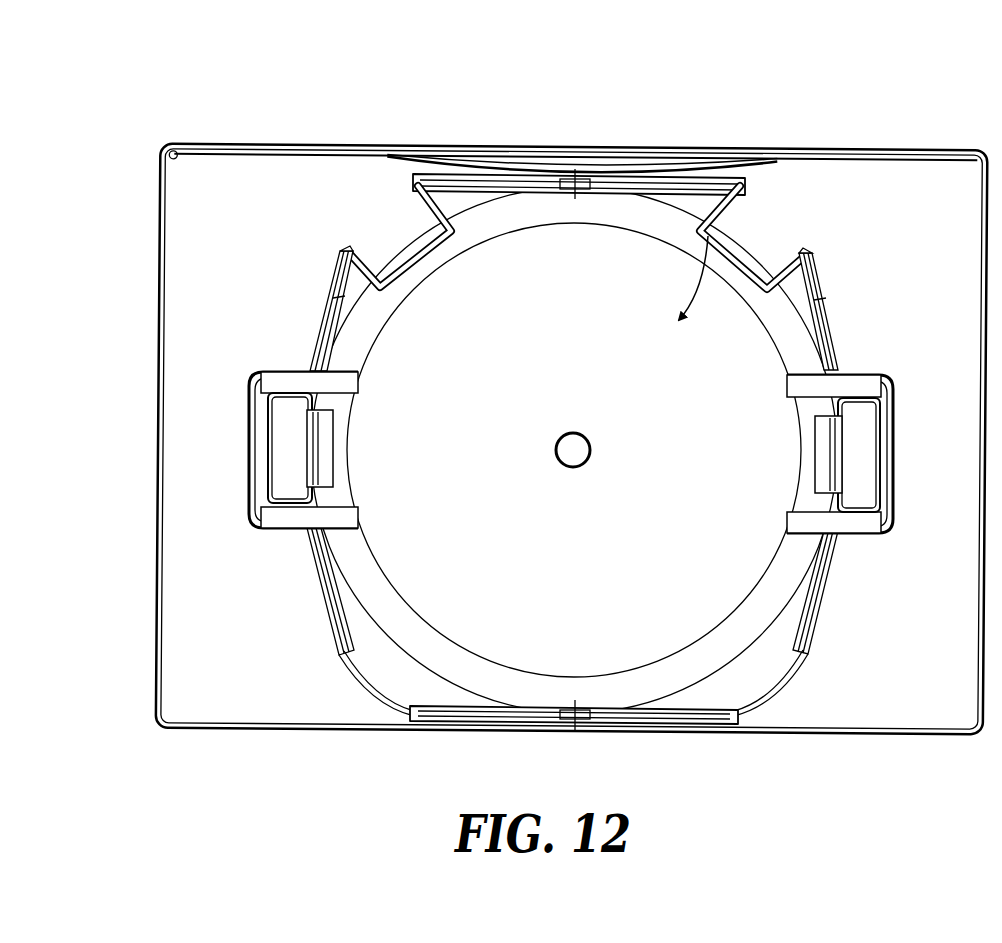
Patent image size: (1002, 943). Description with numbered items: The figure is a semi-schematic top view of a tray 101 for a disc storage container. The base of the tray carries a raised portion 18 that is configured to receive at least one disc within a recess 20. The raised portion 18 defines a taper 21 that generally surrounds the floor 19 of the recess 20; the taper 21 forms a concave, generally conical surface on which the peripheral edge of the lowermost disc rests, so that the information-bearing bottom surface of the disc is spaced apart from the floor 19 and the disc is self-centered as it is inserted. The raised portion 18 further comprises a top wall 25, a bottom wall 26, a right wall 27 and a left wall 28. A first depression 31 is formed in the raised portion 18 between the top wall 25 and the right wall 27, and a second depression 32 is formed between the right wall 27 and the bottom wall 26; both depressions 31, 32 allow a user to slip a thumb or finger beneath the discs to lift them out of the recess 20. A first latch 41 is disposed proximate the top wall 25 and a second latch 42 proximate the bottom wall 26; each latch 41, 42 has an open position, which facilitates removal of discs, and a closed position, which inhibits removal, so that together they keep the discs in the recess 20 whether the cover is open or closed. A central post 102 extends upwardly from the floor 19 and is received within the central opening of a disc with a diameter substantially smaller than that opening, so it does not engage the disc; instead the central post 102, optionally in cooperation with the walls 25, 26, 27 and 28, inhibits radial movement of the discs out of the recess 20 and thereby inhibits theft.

The tray 101 is at (684, 78).
The right wall 27 is at (463, 185).
The left wall 28 is at (430, 702).
The top wall 25 is at (317, 327).
The bottom wall 26 is at (832, 318).
The first depression 31 is at (392, 263).
The recess 20 is at (722, 270).
The second depression 32 is at (690, 262).
The raised portion 18 is at (655, 204).
The taper 21 is at (513, 226).
The floor 19 is at (574, 450).
The central post 102 is at (588, 461).
The first latch 41 is at (332, 450).
The second latch 42 is at (806, 458).